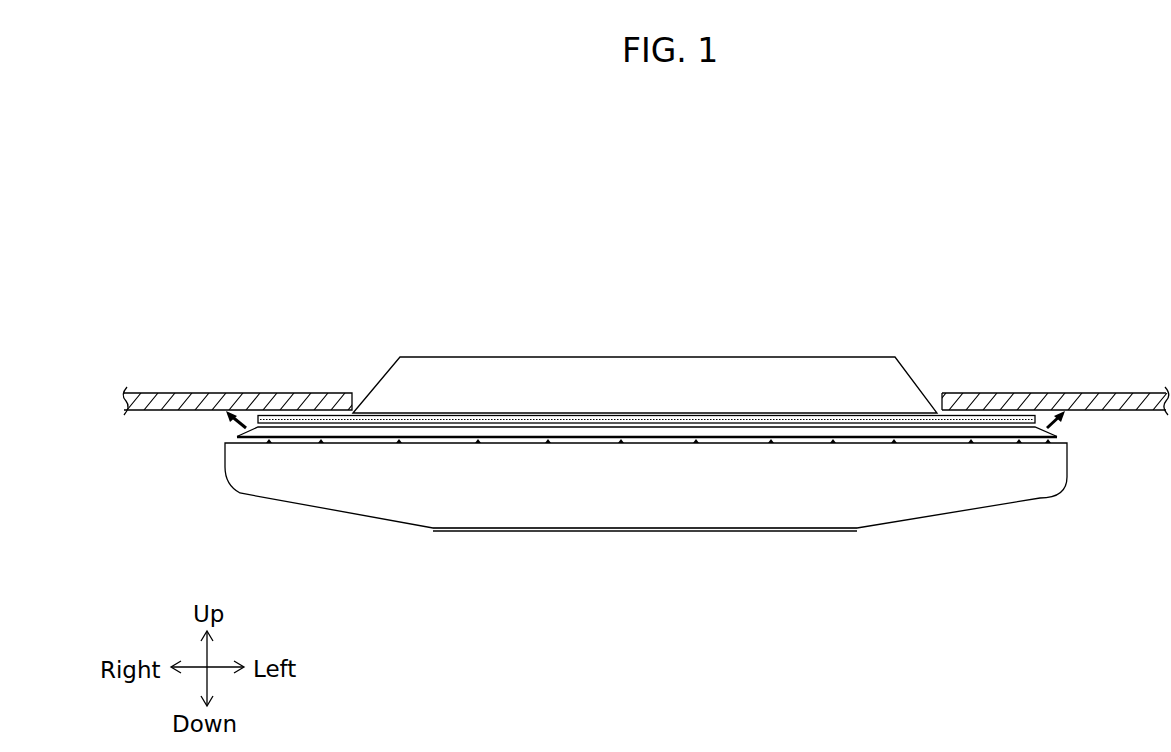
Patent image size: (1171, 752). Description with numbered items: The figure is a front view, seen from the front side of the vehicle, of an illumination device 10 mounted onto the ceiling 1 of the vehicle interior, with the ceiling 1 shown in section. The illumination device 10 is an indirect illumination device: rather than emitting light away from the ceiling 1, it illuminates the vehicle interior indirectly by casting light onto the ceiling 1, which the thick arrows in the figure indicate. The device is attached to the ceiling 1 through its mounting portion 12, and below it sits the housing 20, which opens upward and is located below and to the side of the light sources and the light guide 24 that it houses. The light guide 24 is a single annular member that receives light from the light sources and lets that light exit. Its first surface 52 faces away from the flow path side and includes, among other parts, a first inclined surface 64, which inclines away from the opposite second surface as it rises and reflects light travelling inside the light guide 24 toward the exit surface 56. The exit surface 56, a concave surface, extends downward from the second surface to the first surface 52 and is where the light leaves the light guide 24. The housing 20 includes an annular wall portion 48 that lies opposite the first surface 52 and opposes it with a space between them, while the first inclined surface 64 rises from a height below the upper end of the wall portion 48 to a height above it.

The ceiling 1 is at (226, 395).
The illumination device 10 is at (336, 534).
The mounting portion 12 is at (640, 375).
The housing 20 is at (632, 516).
The light guide 24 is at (229, 428).
The wall portion 48 is at (237, 453).
The first surface 52 is at (296, 442).
The exit surface 56 is at (273, 430).
The first inclined surface 64 is at (267, 441).